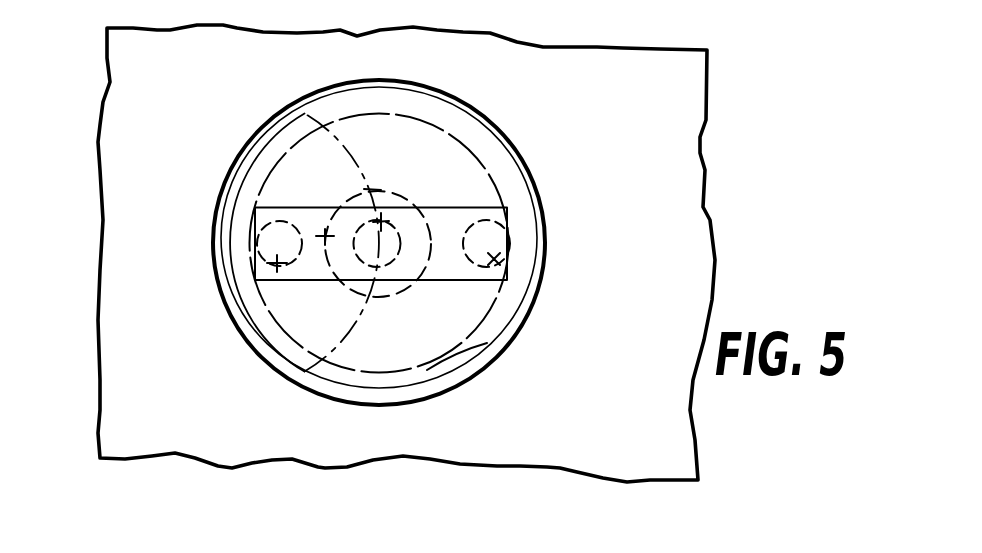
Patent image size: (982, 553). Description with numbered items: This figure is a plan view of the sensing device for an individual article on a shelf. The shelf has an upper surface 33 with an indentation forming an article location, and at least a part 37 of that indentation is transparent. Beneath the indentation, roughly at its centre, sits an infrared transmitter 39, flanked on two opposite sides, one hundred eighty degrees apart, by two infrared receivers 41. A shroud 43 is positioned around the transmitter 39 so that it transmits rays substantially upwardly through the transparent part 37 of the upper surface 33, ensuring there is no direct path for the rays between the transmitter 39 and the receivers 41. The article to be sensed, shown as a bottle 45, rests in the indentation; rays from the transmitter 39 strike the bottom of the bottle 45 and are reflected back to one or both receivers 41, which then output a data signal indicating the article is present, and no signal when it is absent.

The upper surface 33 is at (673, 228).
The transparent part 37 is at (448, 207).
The infrared transmitter 39 is at (372, 197).
The infrared receivers 41 is at (274, 267).
The shroud 43 is at (323, 236).
The bottle 45 is at (452, 356).